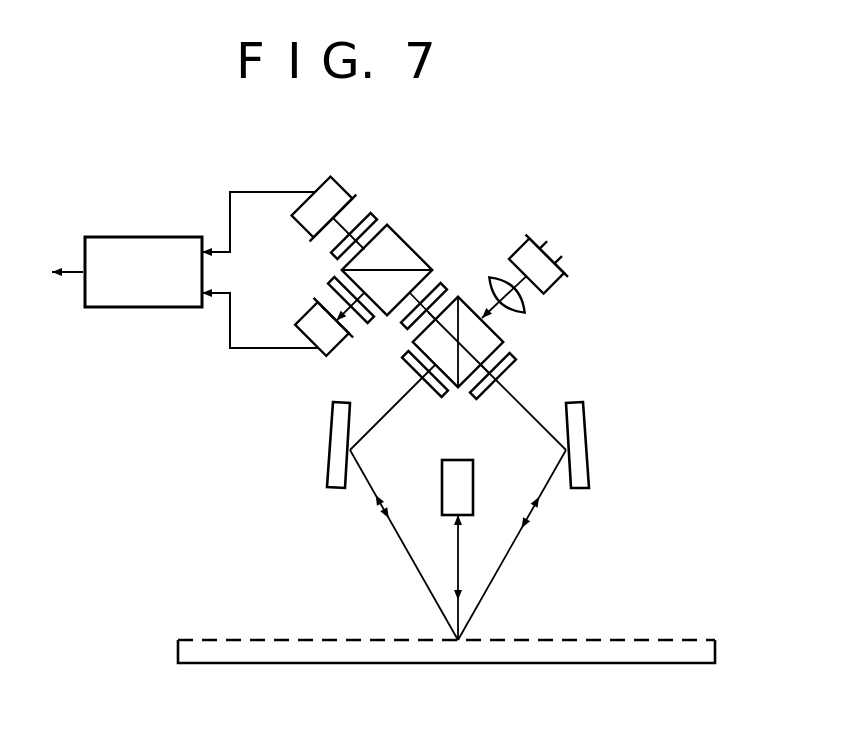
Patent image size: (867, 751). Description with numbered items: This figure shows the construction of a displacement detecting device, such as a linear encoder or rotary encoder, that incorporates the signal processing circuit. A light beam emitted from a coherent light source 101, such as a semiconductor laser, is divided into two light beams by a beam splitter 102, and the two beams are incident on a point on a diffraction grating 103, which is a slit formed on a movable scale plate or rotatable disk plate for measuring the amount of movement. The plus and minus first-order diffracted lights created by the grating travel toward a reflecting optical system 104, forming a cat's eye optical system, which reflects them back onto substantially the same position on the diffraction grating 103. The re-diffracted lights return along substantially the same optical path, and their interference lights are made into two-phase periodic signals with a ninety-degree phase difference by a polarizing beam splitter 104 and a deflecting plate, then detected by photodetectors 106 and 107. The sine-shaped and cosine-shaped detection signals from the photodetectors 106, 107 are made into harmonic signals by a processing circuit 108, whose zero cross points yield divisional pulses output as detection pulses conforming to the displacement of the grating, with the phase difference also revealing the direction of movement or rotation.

The coherent light source 101 is at (552, 283).
The beam splitter 102 is at (458, 294).
The diffraction grating 103 is at (560, 640).
The reflecting optical system 104 is at (403, 247).
The photodetector 106 is at (352, 193).
The photodetector 107 is at (317, 303).
The processing circuit 108 is at (165, 240).